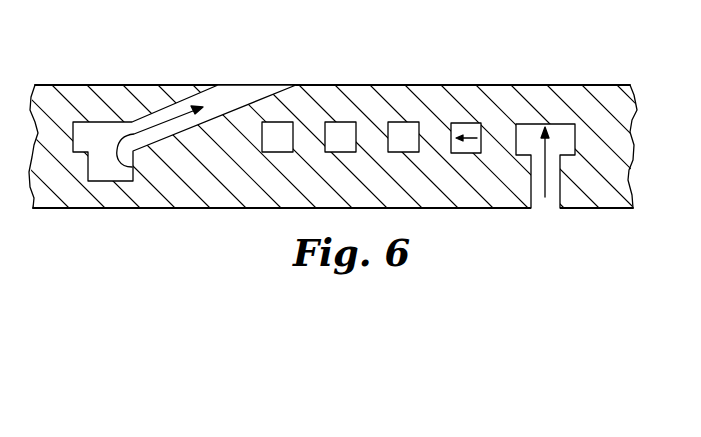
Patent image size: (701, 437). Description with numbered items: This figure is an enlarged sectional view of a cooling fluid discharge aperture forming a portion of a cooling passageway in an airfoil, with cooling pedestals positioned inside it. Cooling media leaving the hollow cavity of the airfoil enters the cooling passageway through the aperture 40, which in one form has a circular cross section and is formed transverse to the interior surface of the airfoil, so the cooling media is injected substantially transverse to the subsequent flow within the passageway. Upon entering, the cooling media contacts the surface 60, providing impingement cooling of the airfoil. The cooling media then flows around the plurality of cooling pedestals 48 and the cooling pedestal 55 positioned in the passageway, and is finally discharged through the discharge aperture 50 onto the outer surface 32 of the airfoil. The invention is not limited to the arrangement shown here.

The outer surface 32 is at (107, 85).
The discharge aperture 50 is at (249, 97).
The cooling pedestal 55 is at (214, 142).
The cooling pedestals 48 is at (375, 127).
The surface 60 is at (560, 127).
The aperture 40 is at (553, 197).